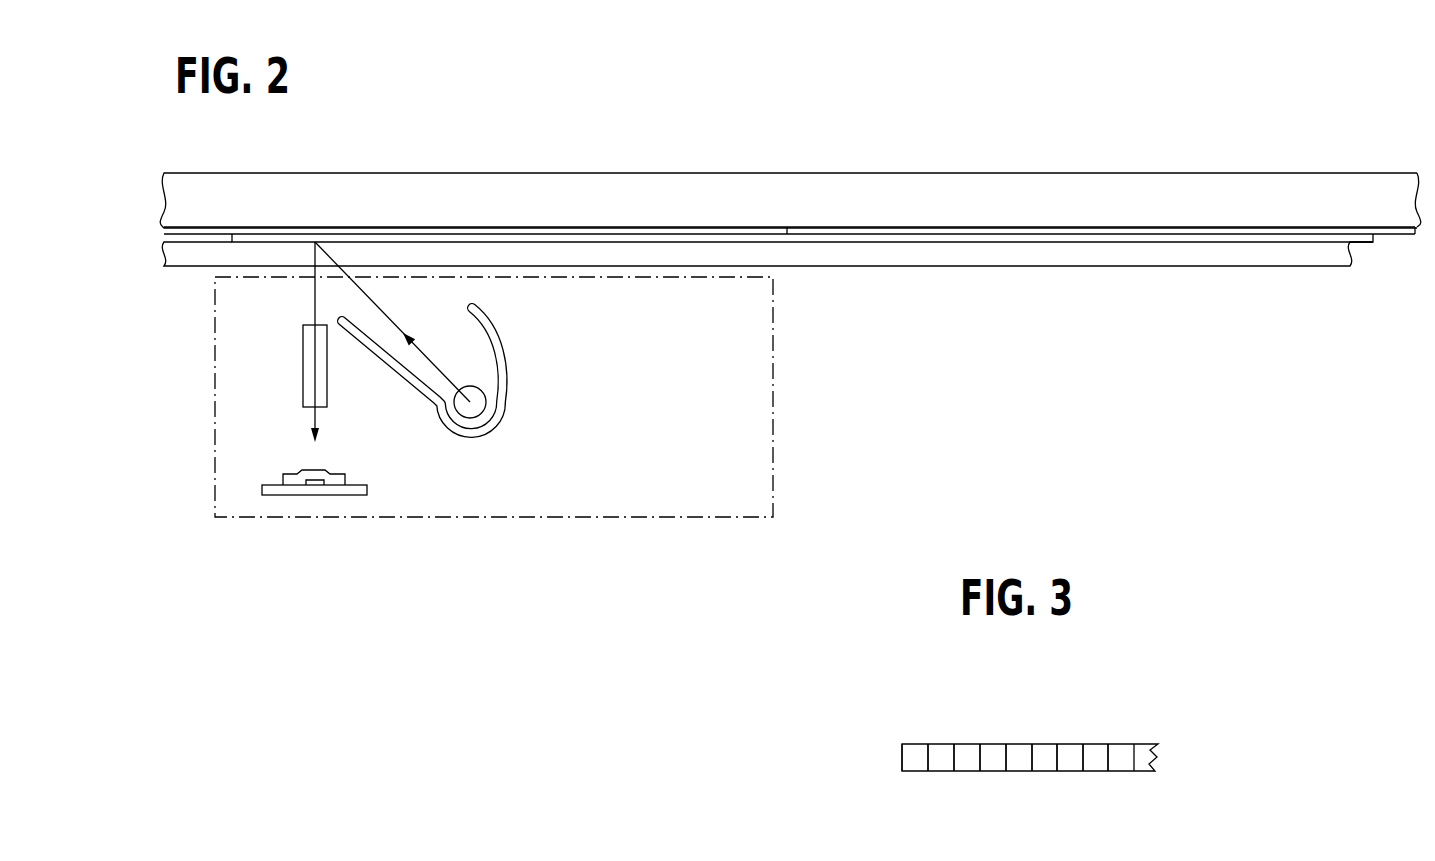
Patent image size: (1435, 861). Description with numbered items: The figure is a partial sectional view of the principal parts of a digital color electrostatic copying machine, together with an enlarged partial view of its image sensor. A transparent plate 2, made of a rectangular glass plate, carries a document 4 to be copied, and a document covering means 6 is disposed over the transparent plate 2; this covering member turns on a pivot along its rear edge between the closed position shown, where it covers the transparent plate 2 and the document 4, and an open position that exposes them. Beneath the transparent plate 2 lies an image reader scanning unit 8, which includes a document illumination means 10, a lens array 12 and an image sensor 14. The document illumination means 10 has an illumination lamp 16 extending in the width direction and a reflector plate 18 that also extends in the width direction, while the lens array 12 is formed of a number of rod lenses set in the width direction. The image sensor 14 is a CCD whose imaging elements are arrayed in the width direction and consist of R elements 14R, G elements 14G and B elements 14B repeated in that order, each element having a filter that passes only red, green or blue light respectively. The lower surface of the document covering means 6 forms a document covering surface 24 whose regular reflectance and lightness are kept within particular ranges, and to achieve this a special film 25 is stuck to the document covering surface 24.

In FIG. 2, the transparent plate 2 is at (1068, 268).
In FIG. 2, the document 4 is at (467, 232).
In FIG. 2, the document covering means 6 is at (1036, 166).
In FIG. 2, the image reader scanning unit 8 is at (204, 387).
In FIG. 2, the document illumination means 10 is at (529, 338).
In FIG. 2, the lens array 12 is at (302, 366).
In FIG. 2, the image sensor 14 is at (353, 464).
In FIG. 2, the illumination lamp 16 is at (487, 393).
In FIG. 2, the reflector plate 18 is at (493, 433).
In FIG. 2, the document covering surface 24 is at (1372, 236).
In FIG. 2, the special film 25 is at (1222, 227).
In FIG. 3, the R element 14R is at (922, 743).
In FIG. 3, the G element 14G is at (937, 743).
In FIG. 3, the B element 14B is at (970, 771).